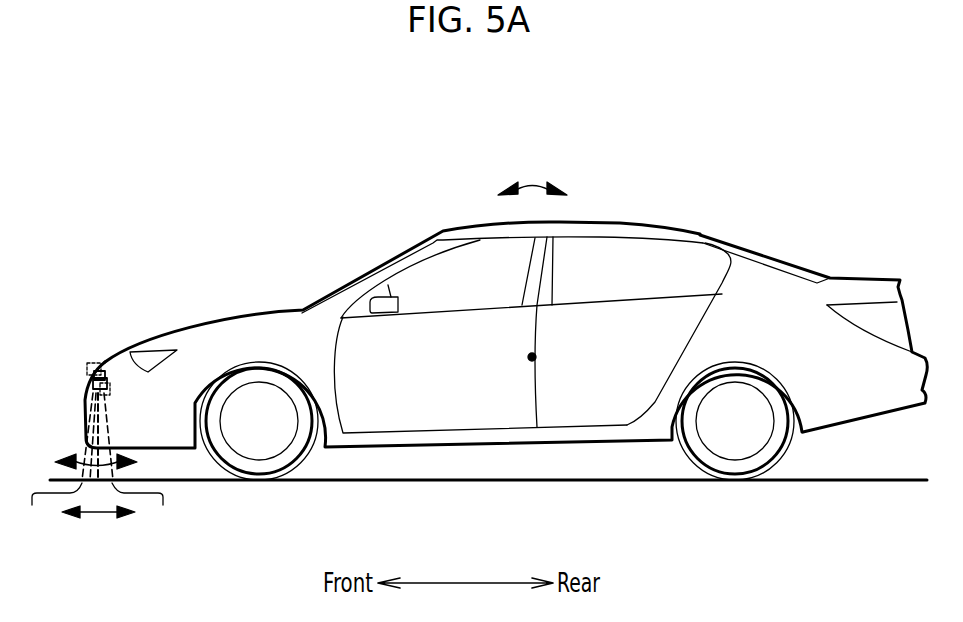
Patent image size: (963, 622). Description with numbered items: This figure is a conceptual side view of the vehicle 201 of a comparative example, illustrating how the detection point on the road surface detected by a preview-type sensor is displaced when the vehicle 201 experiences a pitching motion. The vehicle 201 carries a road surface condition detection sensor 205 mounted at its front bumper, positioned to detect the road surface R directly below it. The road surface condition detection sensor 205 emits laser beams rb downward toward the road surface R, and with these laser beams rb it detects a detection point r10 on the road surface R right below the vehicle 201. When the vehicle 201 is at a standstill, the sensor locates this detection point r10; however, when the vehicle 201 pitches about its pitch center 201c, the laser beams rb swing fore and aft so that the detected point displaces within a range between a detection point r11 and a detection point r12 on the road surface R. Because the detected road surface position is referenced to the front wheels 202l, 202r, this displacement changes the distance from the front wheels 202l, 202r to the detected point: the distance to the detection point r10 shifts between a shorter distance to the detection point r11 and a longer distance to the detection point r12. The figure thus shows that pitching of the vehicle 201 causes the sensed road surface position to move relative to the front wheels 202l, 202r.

The vehicle 201 is at (648, 188).
The pitch center 201c is at (532, 357).
The front wheel 202l is at (281, 452).
The front wheel 202r is at (257, 447).
The road surface condition detection sensor 205 is at (93, 377).
The laser beams rb is at (78, 450).
The detection point r10 is at (98, 483).
The detection point r11 is at (64, 508).
The detection point r12 is at (149, 508).
The road surface R is at (610, 480).